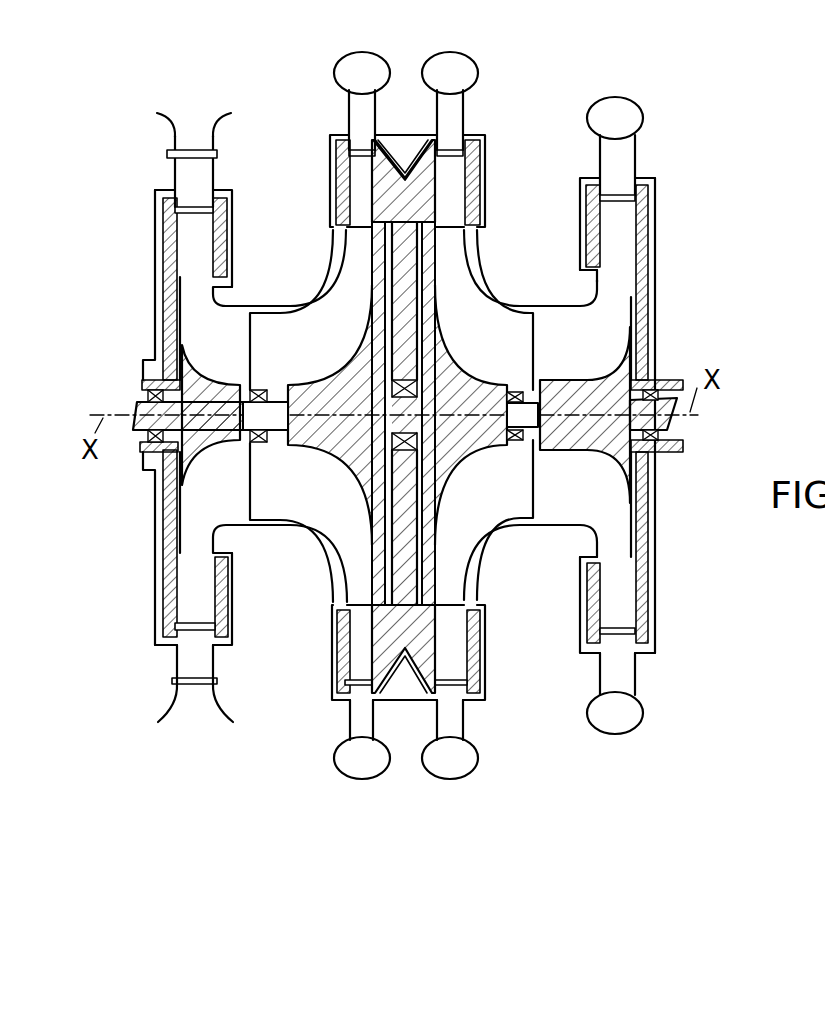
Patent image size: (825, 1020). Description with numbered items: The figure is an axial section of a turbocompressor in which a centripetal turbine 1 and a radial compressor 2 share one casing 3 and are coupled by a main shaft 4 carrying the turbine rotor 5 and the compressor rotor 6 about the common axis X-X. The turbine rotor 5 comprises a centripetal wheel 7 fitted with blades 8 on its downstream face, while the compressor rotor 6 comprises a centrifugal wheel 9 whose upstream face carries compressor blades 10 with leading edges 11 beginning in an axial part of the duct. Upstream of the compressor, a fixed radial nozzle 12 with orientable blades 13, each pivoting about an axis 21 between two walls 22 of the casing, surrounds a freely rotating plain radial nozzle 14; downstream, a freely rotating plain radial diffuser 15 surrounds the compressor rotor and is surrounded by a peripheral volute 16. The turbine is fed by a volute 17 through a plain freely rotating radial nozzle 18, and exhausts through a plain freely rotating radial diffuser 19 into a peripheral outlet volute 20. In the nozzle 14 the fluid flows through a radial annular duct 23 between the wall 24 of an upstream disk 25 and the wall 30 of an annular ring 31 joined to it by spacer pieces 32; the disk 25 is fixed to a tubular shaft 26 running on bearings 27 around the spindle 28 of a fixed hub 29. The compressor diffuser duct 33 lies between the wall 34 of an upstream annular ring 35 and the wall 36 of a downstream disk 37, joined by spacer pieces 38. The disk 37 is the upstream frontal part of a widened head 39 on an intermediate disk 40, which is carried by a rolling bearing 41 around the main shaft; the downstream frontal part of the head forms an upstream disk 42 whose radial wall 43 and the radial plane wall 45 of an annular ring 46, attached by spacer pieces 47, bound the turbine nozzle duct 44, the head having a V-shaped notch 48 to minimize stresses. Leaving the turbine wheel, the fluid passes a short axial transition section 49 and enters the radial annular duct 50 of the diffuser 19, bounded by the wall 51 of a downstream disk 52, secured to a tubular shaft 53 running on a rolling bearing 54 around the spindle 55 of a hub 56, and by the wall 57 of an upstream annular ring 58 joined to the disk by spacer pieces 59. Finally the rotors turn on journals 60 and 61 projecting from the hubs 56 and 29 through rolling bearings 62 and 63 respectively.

The centripetal turbine 1 is at (534, 282).
The radial compressor 2 is at (320, 266).
The casing 3 is at (552, 524).
The main shaft 4 is at (353, 493).
The turbine rotor 5 is at (496, 300).
The compressor rotor 6 is at (303, 309).
The centripetal wheel 7 is at (442, 521).
The blades 8 is at (522, 510).
The centrifugal wheel 9 is at (377, 517).
The compressor blades 10 is at (270, 515).
The leading edges 11 is at (247, 497).
The fixed radial nozzle 12 is at (165, 152).
The orientable blades 13 is at (185, 665).
The rotating and free plain radial nozzle 14 is at (152, 246).
The rotating and free plain radial diffuser 15 is at (336, 158).
The peripheral volute 16 is at (362, 52).
The volute 17 is at (450, 52).
The plain and freely rotating radial nozzle 18 is at (486, 153).
The plain and freely rotating radial diffuser 19 is at (656, 194).
The peripheral outlet volute 20 is at (632, 100).
The axis 21 is at (203, 696).
The walls 22 is at (213, 668).
The radial annular duct 23 is at (170, 268).
The wall 24 is at (182, 224).
The upstream disk 25 is at (165, 310).
The tubular shaft 26 is at (147, 446).
The bearings 27 is at (156, 442).
The spindle 28 is at (153, 405).
The fixed hub 29 is at (215, 440).
The wall 30 is at (207, 241).
The annular ring 31 is at (221, 218).
The spacer pieces 32 is at (198, 207).
The annular and radial duct 33 is at (358, 683).
The wall 34 is at (352, 627).
The upstream annular ring 35 is at (358, 652).
The wall 36 is at (371, 662).
The downstream disk 37 is at (381, 180).
The spacer pieces 38 is at (352, 704).
The head 39 is at (401, 176).
The intermediate disk 40 is at (409, 562).
The rolling bearing 41 is at (403, 383).
The upstream disk 42 is at (426, 213).
The radial wall 43 is at (452, 158).
The radial and annular duct 44 is at (453, 168).
The radial plane wall 45 is at (460, 178).
The annular ring 46 is at (470, 648).
The spacer pieces 47 is at (486, 689).
The V-shaped notch 48 is at (423, 690).
The short axial transition section 49 is at (545, 330).
The radial and annular duct 50 is at (617, 228).
The wall 51 is at (632, 284).
The downstream disk 52 is at (641, 256).
The tubular shaft 53 is at (670, 372).
The rolling bearing 54 is at (660, 448).
The spindle 55 is at (660, 432).
The hub 56 is at (605, 455).
The wall 57 is at (604, 590).
The upstream annular ring 58 is at (600, 617).
The spacer pieces 59 is at (640, 640).
The journal 60 is at (518, 438).
The journal 61 is at (280, 420).
The rolling bearing 62 is at (515, 390).
The rolling bearing 63 is at (258, 392).